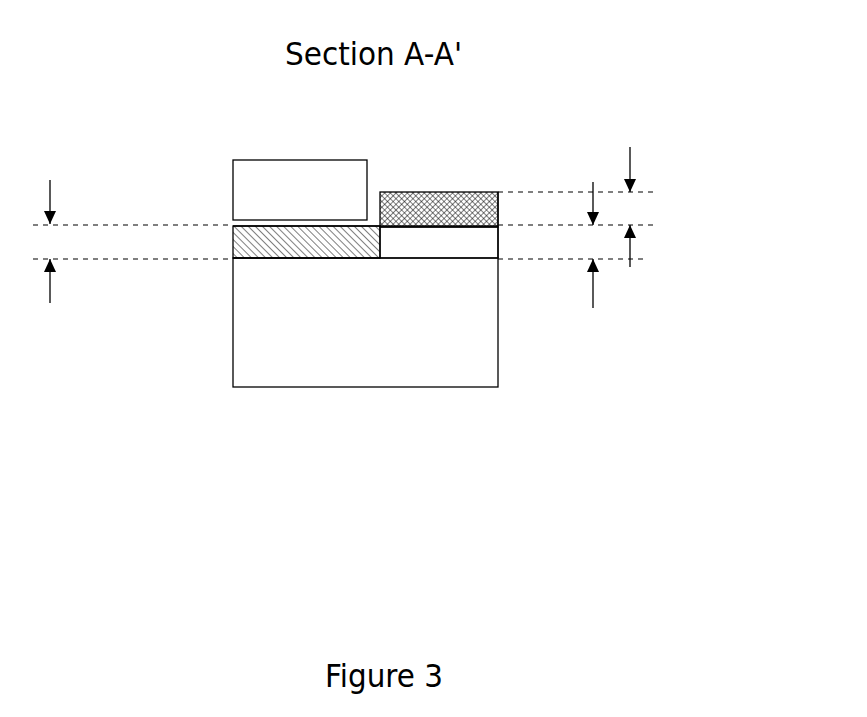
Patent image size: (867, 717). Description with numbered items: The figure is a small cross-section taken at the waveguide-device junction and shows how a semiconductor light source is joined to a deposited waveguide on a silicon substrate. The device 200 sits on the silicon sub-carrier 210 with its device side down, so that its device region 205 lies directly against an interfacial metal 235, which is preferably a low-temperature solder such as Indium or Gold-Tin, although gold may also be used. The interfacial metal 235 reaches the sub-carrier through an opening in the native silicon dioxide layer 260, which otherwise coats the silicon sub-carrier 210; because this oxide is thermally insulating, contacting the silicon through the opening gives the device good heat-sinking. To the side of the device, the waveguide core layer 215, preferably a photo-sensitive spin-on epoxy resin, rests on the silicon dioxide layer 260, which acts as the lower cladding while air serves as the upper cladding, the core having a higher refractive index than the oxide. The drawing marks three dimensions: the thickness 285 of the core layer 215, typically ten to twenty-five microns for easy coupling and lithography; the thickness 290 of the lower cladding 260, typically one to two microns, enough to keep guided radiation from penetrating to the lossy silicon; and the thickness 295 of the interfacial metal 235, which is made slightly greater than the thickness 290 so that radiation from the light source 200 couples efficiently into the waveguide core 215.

The device 200 is at (300, 190).
The device region 205 is at (263, 220).
The silicon sub-carrier 210 is at (365, 322).
The waveguide core layer 215 is at (430, 202).
The interfacial metal 235 is at (250, 247).
The silicon dioxide layer 260 is at (498, 250).
The thickness of the core layer 285 is at (633, 189).
The thickness of the lower cladding 290 is at (602, 227).
The thickness of the interfacial metal 295 is at (57, 222).